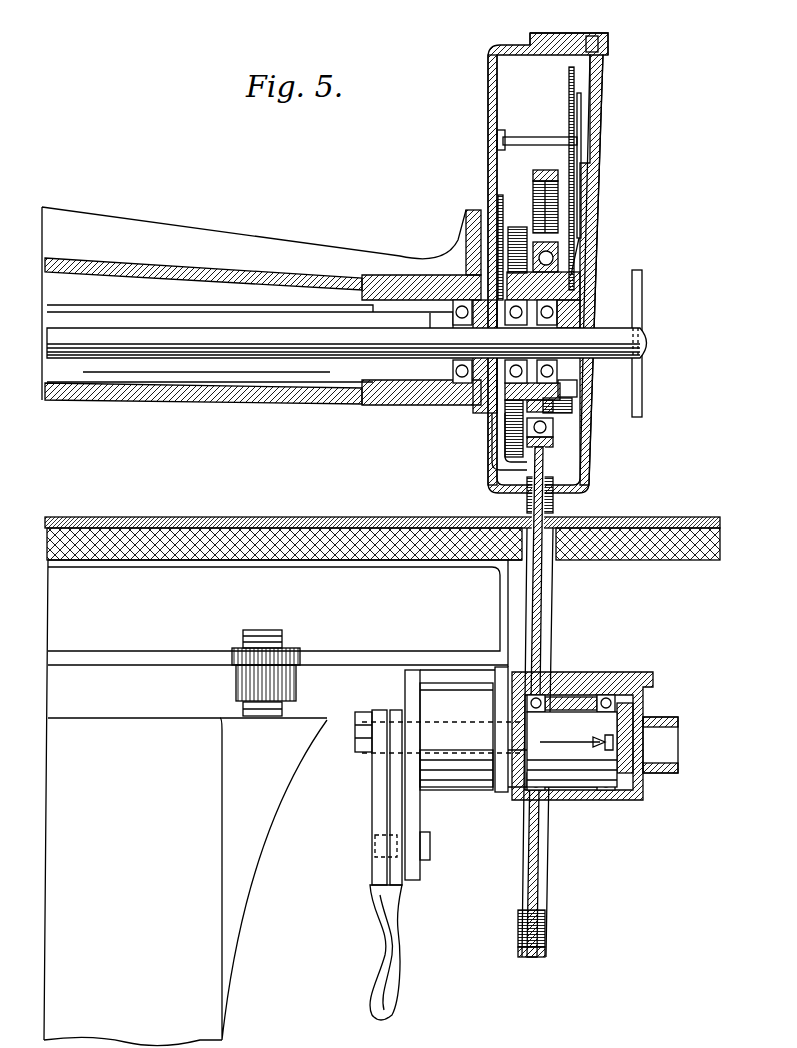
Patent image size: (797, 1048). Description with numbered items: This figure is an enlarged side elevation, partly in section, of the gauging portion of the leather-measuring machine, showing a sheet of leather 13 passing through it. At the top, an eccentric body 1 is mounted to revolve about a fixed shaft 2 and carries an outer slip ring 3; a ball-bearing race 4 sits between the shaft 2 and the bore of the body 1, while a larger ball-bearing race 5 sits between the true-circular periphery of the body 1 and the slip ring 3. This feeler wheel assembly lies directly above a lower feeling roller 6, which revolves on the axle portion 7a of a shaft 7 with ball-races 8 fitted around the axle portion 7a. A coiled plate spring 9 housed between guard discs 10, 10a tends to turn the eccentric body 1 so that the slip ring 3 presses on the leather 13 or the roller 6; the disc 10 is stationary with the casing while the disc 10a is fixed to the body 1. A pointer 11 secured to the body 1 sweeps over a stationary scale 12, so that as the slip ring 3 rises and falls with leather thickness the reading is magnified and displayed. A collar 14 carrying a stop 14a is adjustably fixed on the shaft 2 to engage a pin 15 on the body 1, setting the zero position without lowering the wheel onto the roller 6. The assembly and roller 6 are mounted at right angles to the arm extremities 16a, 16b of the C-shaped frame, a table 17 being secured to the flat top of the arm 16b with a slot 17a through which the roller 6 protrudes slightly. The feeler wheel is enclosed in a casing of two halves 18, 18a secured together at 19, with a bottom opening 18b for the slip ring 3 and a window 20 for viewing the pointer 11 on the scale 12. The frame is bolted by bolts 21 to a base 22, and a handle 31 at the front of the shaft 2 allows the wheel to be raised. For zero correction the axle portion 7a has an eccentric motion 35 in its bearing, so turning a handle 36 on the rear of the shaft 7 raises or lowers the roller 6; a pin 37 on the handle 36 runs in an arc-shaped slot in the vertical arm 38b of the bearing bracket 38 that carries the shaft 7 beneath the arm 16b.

The eccentric body 1 is at (575, 292).
The shaft 2 is at (653, 344).
The outer slip ring 3 is at (533, 173).
The ball-bearing race 4 is at (562, 303).
The ball-bearing race 5 is at (547, 430).
The lower feeling roller 6 is at (533, 958).
The shaft 7 is at (465, 733).
The axle portion 7a is at (573, 748).
The ball-races 8 is at (588, 704).
The coiled plate spring 9 is at (490, 470).
The guard disc 10 is at (497, 212).
The guard disc 10a is at (530, 218).
The pointer 11 is at (580, 140).
The scale 12 is at (574, 86).
The sheet of leather 13 is at (322, 517).
The collar 14 is at (573, 317).
The stop 14a is at (577, 391).
The pin 15 is at (566, 421).
The arm extremity 16a is at (190, 270).
The arm extremity 16b is at (283, 800).
The table 17 is at (708, 567).
The slot 17a is at (520, 567).
The casing portion 18 is at (602, 224).
The casing portion 18a is at (488, 86).
The opening 18b is at (555, 496).
The securing point 19 is at (596, 38).
The window 20 is at (602, 104).
The bolts 21 is at (245, 633).
The base 22 is at (203, 1039).
The handle 31 is at (642, 283).
The eccentric motion 35 is at (556, 779).
The handle 36 is at (372, 973).
The pin 37 is at (395, 849).
The bearing bracket 38 is at (499, 794).
The vertical arm 38b is at (410, 818).